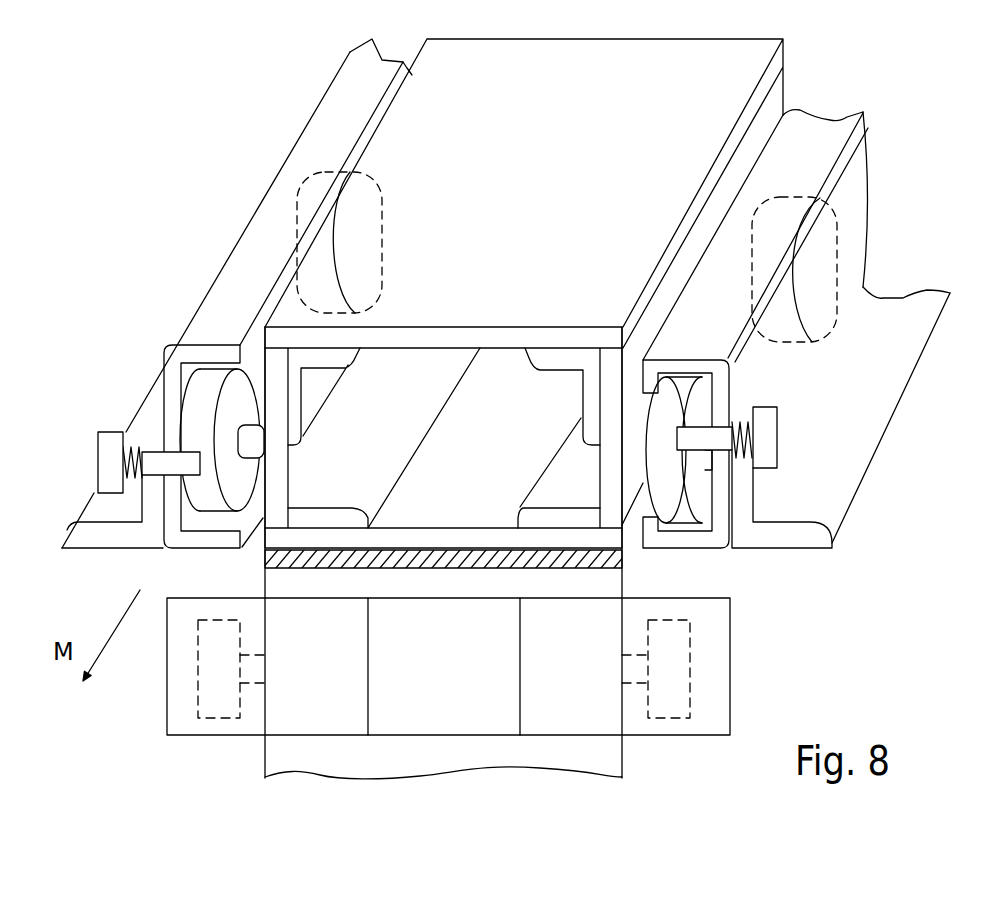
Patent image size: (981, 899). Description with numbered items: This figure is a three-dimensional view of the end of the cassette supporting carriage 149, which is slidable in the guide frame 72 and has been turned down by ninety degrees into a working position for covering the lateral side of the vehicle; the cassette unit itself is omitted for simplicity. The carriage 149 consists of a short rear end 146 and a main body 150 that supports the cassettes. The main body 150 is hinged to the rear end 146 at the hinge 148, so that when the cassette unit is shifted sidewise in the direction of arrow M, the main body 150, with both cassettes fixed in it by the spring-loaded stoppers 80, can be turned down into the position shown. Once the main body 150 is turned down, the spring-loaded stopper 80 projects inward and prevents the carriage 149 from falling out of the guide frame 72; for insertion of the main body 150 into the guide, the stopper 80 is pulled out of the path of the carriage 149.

The guide frame 72 is at (203, 210).
The short rear end 146 is at (802, 157).
The cassette supporting carriage 149 is at (278, 371).
The spring-loaded stopper 80 is at (767, 453).
The hinge 148 is at (622, 555).
The main body 150 is at (600, 587).